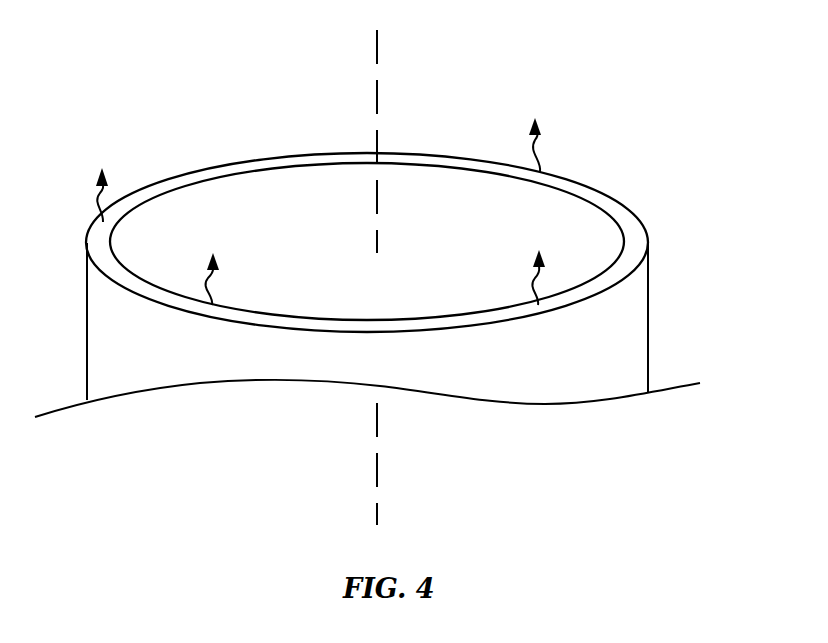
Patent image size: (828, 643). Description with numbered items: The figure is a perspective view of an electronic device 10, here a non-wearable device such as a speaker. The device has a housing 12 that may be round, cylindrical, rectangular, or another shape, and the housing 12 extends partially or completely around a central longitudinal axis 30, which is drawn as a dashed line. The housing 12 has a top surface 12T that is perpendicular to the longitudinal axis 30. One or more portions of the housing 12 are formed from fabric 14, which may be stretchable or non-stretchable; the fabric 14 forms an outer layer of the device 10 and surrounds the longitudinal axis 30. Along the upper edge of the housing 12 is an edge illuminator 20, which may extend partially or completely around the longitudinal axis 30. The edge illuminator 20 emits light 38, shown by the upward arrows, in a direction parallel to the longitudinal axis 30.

The electronic device 10 is at (584, 106).
The housing 12 is at (648, 328).
The top surface 12T is at (253, 188).
The fabric 14 is at (98, 323).
The edge illuminator 20 is at (632, 227).
The longitudinal axis 30 is at (377, 96).
The light 38 is at (207, 276).